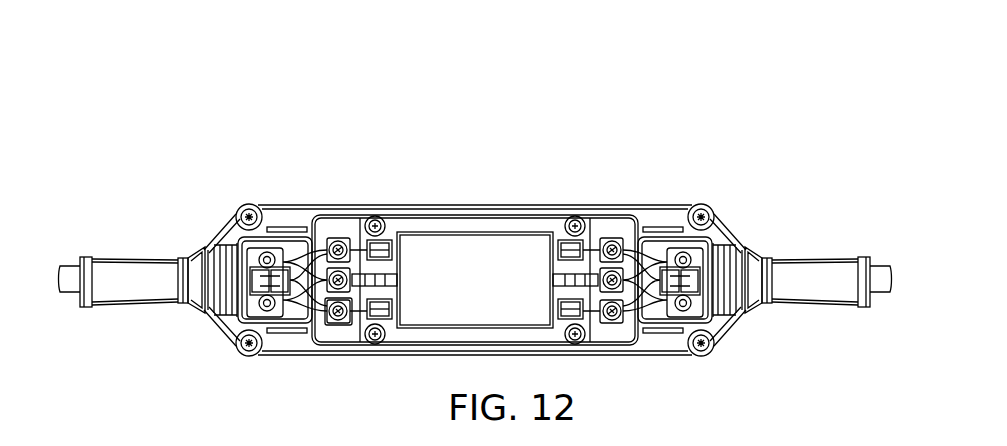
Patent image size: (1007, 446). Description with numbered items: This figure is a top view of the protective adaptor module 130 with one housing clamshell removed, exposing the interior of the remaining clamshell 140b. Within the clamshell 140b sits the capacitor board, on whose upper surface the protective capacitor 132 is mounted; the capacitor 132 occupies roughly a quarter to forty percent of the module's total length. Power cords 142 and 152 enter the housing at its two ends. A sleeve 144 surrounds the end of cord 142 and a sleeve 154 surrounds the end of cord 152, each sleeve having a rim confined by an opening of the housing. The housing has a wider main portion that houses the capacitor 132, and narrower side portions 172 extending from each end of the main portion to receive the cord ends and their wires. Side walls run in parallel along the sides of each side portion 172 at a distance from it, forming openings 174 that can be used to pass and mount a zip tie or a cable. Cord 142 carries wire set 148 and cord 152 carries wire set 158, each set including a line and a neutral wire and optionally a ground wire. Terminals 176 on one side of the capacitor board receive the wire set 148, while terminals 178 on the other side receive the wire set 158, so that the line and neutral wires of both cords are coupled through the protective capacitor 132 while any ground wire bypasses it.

The protective adaptor module 130 is at (162, 104).
The protective capacitor 132 is at (430, 247).
The clamshell 140b is at (488, 207).
The power cord 142 is at (880, 270).
The sleeve 144 is at (783, 268).
The wire set 148 is at (644, 228).
The power cord 152 is at (73, 278).
The sleeve 154 is at (142, 268).
The wire set 158 is at (330, 228).
The side portion 172 is at (294, 232).
The opening 174 is at (298, 238).
The terminals 176 is at (581, 230).
The terminals 178 is at (352, 323).